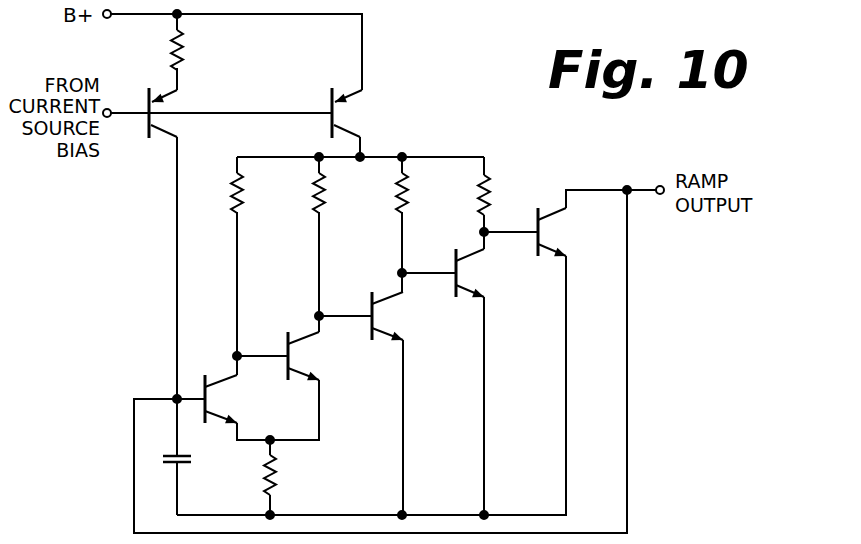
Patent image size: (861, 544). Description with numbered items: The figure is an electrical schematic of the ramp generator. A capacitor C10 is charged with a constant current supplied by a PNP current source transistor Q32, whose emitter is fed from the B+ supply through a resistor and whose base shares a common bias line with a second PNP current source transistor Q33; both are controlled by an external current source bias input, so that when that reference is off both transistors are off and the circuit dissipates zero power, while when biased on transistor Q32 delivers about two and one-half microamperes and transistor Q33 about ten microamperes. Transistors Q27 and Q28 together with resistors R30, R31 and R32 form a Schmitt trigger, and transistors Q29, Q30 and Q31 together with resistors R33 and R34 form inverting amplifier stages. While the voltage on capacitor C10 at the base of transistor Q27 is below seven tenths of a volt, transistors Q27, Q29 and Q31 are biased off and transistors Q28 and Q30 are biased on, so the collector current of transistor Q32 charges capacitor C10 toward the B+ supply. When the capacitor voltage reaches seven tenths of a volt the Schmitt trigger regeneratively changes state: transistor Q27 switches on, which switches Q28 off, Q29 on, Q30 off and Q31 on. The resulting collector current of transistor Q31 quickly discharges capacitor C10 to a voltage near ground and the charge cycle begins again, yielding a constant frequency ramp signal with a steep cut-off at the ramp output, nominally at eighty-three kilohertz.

The transistor Q27 is at (216, 399).
The transistor Q28 is at (299, 356).
The transistor Q29 is at (383, 316).
The transistor Q30 is at (466, 273).
The transistor Q31 is at (549, 232).
The PNP current source transistor Q32 is at (149, 131).
The PNP current source transistor Q33 is at (350, 113).
The resistor R30 is at (278, 478).
The resistor R31 is at (245, 193).
The resistor R32 is at (327, 193).
The resistor R33 is at (410, 193).
The resistor R34 is at (492, 195).
The capacitor C10 is at (190, 466).